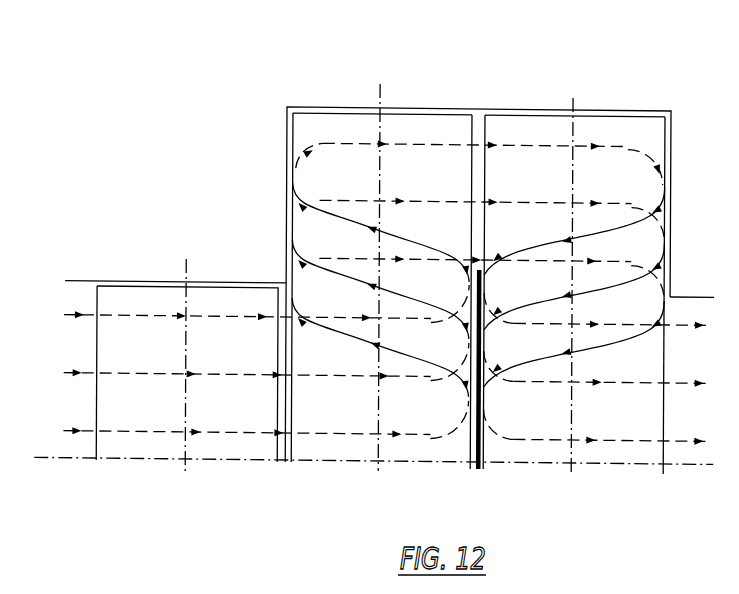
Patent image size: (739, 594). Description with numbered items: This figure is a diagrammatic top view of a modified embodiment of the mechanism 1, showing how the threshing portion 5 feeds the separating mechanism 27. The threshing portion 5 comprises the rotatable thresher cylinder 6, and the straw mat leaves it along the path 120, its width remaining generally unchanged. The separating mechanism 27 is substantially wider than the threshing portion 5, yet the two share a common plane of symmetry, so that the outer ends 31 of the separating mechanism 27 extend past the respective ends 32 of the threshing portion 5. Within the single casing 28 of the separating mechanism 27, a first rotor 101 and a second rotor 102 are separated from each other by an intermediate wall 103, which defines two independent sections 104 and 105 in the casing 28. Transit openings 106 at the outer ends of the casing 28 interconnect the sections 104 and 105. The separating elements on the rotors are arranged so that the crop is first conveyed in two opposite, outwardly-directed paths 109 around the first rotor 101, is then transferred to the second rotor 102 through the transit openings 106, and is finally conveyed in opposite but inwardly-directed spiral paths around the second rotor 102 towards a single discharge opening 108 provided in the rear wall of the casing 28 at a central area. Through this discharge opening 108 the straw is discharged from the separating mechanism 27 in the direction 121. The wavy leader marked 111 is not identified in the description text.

The mechanism 1 is at (279, 130).
The threshing portion 5 is at (202, 272).
The thresher cylinder 6 is at (99, 302).
The separating mechanism 27 is at (540, 86).
The casing 28 is at (628, 105).
The outer ends of the separating mechanism 31 is at (417, 106).
The ends of the threshing mechanism 32 is at (154, 284).
The first rotor 101 is at (320, 108).
The second rotor 102 is at (667, 134).
The intermediate wall 103 is at (485, 440).
The first section 104 is at (360, 98).
The second section 105 is at (525, 87).
The transit openings 106 is at (478, 118).
The discharge opening 108 is at (685, 288).
The outwardly-directed paths 109 is at (351, 337).
The second chamber flow path 111 is at (608, 335).
The path 120 is at (107, 357).
The direction 121 is at (682, 326).